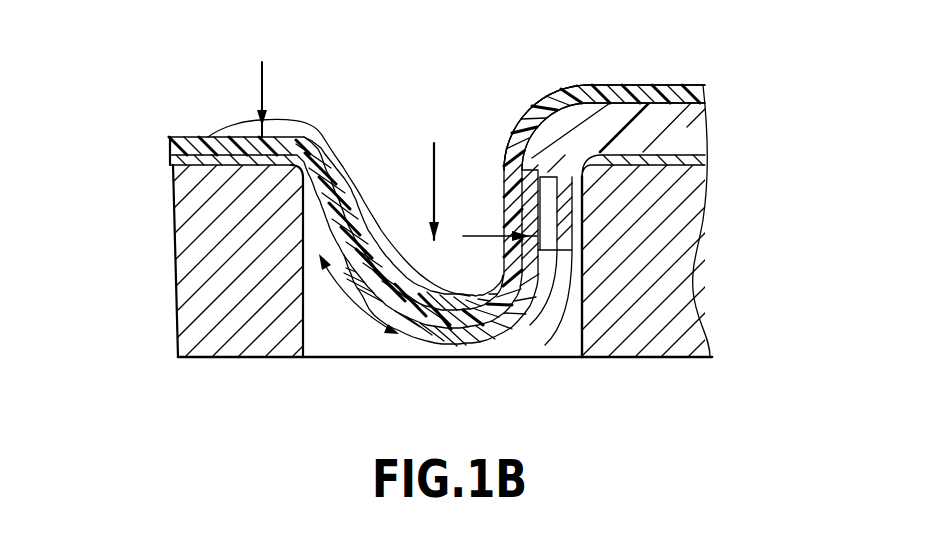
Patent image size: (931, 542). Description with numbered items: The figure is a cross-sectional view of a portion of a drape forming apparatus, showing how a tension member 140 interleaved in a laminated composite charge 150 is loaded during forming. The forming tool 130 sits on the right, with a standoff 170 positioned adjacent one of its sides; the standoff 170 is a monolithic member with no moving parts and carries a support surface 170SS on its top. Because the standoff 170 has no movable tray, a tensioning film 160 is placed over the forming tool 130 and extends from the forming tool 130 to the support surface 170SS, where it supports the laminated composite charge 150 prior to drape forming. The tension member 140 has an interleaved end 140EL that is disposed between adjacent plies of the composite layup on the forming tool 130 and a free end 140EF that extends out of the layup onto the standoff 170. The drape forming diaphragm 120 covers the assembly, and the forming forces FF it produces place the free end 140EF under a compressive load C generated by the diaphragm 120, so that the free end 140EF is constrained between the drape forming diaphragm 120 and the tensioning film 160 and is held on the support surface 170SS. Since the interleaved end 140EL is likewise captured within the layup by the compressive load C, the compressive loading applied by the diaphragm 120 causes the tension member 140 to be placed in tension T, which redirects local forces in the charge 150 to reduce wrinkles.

The drape forming diaphragm 120 is at (578, 82).
The forming tool 130 is at (687, 300).
The tension member 140 is at (500, 317).
The free end 140EF is at (212, 134).
The interleaved end 140EL is at (525, 132).
The laminated composite charge 150 is at (688, 125).
The tensioning film 160 is at (477, 338).
The standoff 170 is at (197, 318).
The support surface 170SS is at (195, 158).
The compressive load C is at (263, 80).
The forming forces FF is at (430, 192).
The tension T is at (352, 303).